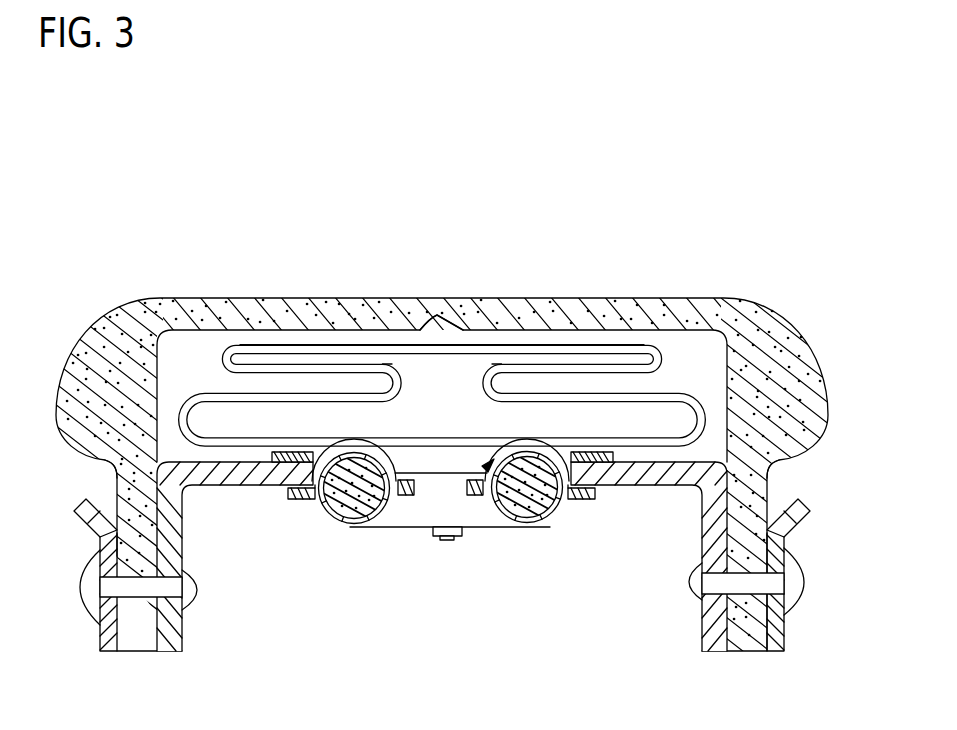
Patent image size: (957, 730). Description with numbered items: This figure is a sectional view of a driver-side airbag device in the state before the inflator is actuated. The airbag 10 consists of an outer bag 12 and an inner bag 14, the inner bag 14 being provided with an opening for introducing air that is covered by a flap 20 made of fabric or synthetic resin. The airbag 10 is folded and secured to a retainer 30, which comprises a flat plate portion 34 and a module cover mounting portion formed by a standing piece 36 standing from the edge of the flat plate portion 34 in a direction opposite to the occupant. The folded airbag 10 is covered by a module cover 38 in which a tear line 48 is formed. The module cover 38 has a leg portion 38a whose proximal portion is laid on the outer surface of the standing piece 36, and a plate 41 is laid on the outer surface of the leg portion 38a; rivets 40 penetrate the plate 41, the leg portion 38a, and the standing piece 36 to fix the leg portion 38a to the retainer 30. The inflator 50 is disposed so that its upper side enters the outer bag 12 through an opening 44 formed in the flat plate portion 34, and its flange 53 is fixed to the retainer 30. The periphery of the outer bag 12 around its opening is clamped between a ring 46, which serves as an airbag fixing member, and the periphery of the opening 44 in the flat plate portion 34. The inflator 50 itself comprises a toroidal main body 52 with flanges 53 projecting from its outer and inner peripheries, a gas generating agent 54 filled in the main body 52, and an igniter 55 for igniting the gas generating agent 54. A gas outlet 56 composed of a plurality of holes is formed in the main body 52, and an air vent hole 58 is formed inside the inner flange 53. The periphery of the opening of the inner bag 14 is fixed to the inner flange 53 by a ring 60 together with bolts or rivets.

The airbag 10 is at (262, 346).
The outer bag 12 is at (520, 343).
The inner bag 14 is at (470, 376).
The flap 20 is at (443, 472).
The retainer 30 is at (237, 487).
The flat plate portion 34 is at (641, 487).
The standing piece 36 is at (182, 640).
The module cover 38 is at (585, 297).
The leg portion 38a is at (108, 470).
The rivets 40 is at (197, 590).
The plate 41 is at (98, 528).
The opening 44 is at (310, 455).
The ring 46 is at (598, 455).
The tear line 48 is at (415, 325).
The inflator 50 is at (403, 543).
The main body 52 is at (303, 497).
The flanges 53 is at (333, 505).
The gas generating agent 54 is at (352, 520).
The igniter 55 is at (455, 541).
The gas outlet 56 is at (355, 454).
The air vent hole 58 is at (487, 500).
The ring 60 is at (447, 541).